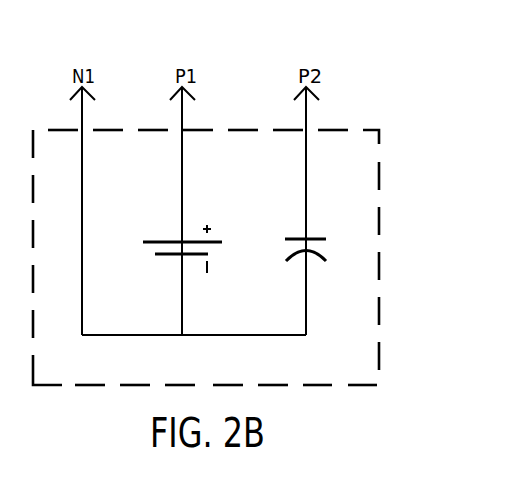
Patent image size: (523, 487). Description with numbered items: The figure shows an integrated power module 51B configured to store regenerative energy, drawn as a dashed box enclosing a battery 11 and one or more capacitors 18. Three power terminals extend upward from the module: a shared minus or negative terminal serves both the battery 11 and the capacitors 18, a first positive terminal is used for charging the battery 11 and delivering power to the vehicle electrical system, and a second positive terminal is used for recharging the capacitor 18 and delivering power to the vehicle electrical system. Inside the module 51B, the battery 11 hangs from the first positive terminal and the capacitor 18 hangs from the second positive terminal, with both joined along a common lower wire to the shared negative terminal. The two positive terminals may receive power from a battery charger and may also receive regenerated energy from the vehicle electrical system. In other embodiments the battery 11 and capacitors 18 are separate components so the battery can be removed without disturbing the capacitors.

The integrated power module 51B is at (240, 85).
The battery 11 is at (165, 228).
The capacitor 18 is at (285, 232).